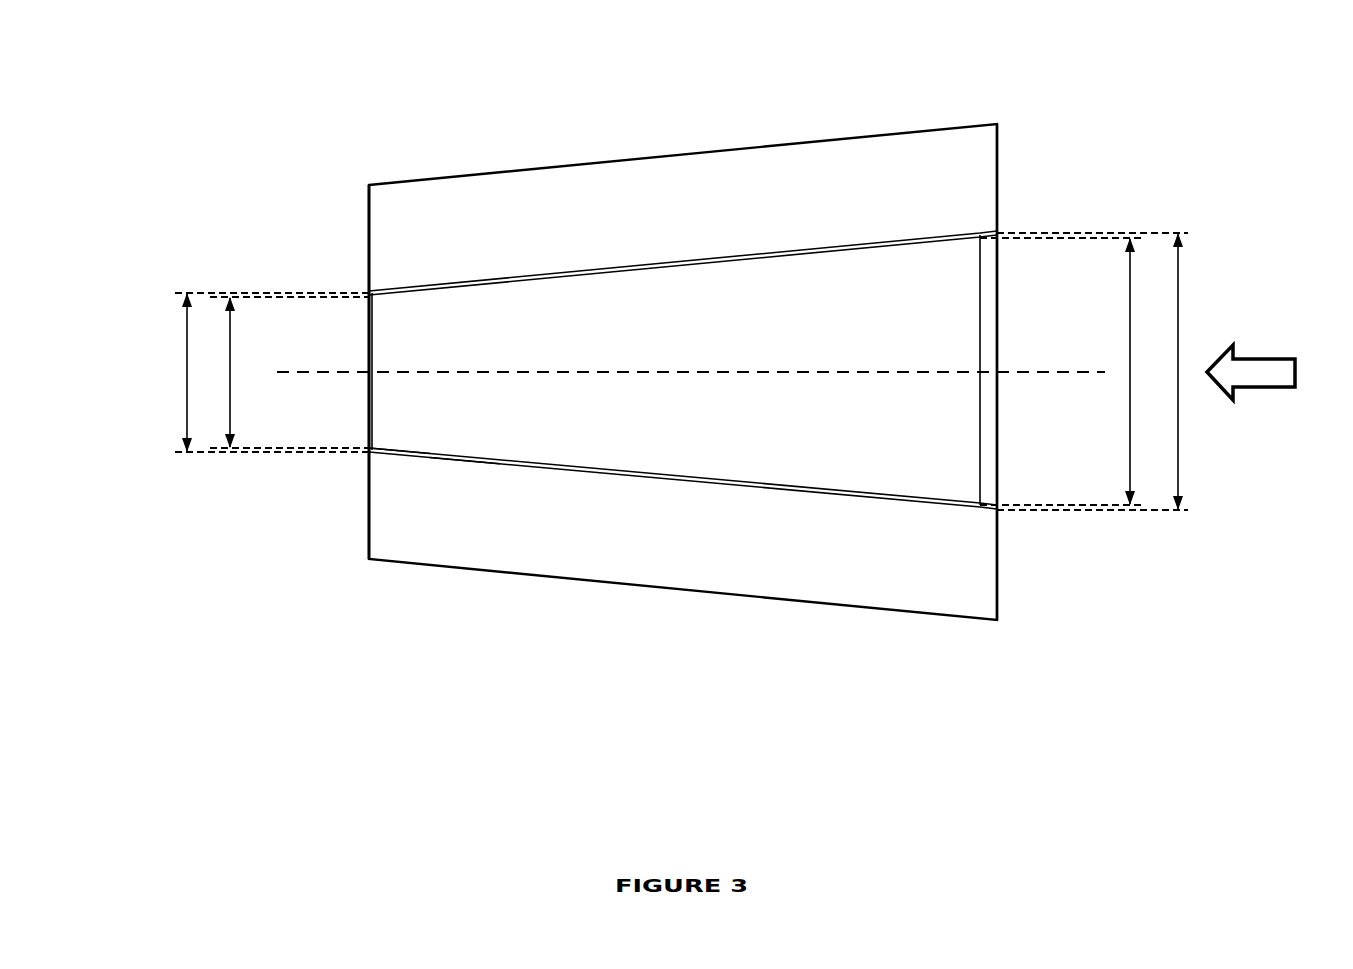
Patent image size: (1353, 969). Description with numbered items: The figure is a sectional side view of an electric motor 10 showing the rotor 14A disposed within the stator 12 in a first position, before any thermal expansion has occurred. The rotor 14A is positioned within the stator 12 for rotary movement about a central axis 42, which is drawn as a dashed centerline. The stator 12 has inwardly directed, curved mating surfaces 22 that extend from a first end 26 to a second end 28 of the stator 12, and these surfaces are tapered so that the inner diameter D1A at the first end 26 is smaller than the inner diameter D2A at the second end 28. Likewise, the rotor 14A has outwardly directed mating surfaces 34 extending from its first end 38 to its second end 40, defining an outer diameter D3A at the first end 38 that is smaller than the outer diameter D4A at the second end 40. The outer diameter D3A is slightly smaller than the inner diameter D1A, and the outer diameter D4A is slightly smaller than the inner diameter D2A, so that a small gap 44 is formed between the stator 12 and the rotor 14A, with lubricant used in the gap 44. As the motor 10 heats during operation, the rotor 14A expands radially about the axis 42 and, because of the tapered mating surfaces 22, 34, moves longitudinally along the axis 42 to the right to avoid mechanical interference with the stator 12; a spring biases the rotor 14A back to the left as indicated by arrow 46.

The motor 10 is at (232, 111).
The stator 12 is at (392, 218).
The rotor 14A is at (679, 369).
The mating surfaces 22 is at (513, 460).
The first end 26 is at (368, 257).
The second end 28 is at (998, 182).
The mating surfaces 34 is at (395, 453).
The first end 38 is at (368, 330).
The second end 40 is at (981, 305).
The central axis 42 is at (316, 374).
The gap 44 is at (455, 460).
The arrow 46 is at (1275, 389).
The inner diameter D1A is at (186, 348).
The inner diameter D2A is at (1180, 263).
The outer diameter D3A is at (228, 424).
The outer diameter D4A is at (1131, 420).